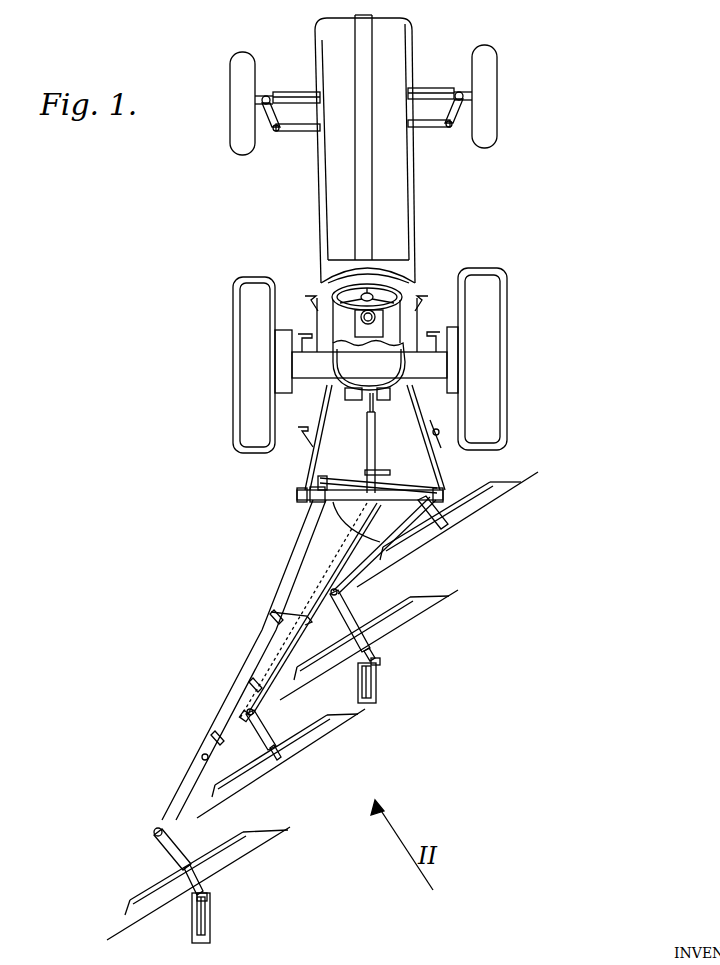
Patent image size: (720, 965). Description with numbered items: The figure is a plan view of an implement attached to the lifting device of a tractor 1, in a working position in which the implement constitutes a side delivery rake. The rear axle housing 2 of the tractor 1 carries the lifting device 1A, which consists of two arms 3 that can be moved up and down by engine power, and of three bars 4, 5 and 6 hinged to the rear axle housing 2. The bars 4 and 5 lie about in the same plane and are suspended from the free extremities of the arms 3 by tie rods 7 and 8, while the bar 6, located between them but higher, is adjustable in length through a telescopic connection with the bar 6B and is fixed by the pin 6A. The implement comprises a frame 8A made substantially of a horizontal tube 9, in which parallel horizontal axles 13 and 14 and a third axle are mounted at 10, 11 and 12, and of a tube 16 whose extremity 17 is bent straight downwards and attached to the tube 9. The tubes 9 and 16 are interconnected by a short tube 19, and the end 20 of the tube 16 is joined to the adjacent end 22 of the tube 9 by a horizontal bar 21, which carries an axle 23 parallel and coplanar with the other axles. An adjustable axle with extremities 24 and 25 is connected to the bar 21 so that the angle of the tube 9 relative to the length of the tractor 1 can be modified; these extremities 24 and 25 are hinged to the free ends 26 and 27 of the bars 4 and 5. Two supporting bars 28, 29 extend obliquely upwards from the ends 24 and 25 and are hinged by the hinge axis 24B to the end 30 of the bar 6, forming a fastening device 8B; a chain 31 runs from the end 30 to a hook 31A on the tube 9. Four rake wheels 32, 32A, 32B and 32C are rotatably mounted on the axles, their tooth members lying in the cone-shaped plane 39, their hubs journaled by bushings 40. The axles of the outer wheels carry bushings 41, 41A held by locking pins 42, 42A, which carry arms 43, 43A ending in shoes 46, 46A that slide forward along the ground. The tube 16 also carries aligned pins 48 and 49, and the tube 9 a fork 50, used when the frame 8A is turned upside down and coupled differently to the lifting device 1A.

The tractor 1 is at (406, 209).
The lifting device 1A is at (349, 425).
The rear axle housing 2 is at (406, 389).
The arms 3 is at (314, 397).
The bar 4 is at (303, 471).
The bar 5 is at (452, 468).
The bar 6 is at (390, 474).
The pin 6A is at (389, 472).
The bar 6B is at (365, 476).
The tie rod 7 is at (303, 447).
The tie rod 8 is at (438, 433).
The frame 8A is at (338, 558).
The fastening device 8B is at (366, 526).
The horizontal tube 9 is at (322, 643).
The mounting place 10 is at (150, 833).
The mounting place 11 is at (262, 712).
The mounting place 12 is at (348, 598).
The axle 13 is at (182, 845).
The axle 14 is at (253, 737).
The tube 16 is at (262, 632).
The extremity 17 is at (197, 760).
The short tube 19 is at (314, 614).
The end 20 is at (326, 480).
The horizontal bar 21 is at (345, 486).
The end 22 is at (387, 523).
The axle 23 is at (455, 525).
The extremity 24 is at (306, 512).
The hinge axis 24B is at (397, 478).
The extremity 25 is at (445, 494).
The free end 26 is at (300, 500).
The free end 27 is at (476, 512).
The supporting bar 28 is at (331, 506).
The supporting bar 29 is at (413, 489).
The end 30 is at (337, 506).
The chain 31 is at (303, 610).
The hook 31A is at (238, 718).
The rake wheel 32 is at (267, 836).
The rake wheel 32A is at (315, 741).
The rake wheel 32B is at (450, 597).
The rake wheel 32C is at (509, 490).
The plane 39 is at (520, 481).
The bushing 40 is at (438, 548).
The bushing 41 is at (208, 880).
The bushing 41A is at (376, 648).
The locking pin 42 is at (190, 898).
The locking pin 42A is at (338, 676).
The arm 43 is at (197, 920).
The arm 43A is at (358, 686).
The shoe 46 is at (212, 938).
The shoe 46A is at (378, 690).
The pin 48 is at (208, 738).
The pin 49 is at (270, 607).
The fork 50 is at (265, 664).